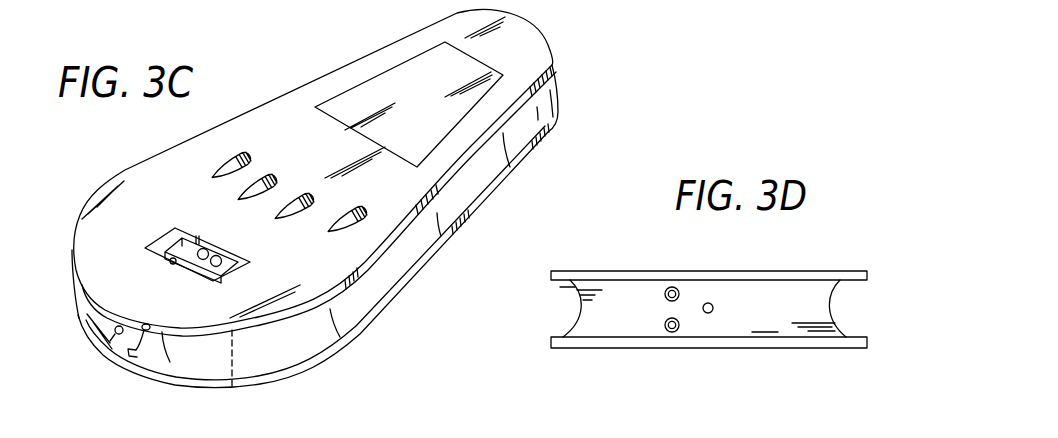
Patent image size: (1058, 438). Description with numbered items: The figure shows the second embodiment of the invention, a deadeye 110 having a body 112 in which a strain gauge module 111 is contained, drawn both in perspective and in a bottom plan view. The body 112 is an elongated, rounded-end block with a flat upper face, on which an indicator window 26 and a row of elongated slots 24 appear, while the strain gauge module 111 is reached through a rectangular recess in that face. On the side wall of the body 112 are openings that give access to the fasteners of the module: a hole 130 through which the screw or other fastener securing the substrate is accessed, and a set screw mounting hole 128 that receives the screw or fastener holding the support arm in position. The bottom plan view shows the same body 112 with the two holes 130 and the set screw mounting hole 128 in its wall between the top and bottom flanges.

In FIG. 3D, the deadeye 110 is at (848, 228).
In FIG. 3C, the strain gauge module 111 is at (409, 23).
In FIG. 3C, the body 112 is at (292, 105).
In FIG. 3C, the display window 26 is at (391, 84).
In FIG. 3C, the indicator slots 24 is at (247, 150).
In FIG. 3C, the hole 130 is at (115, 334).
In FIG. 3D, the hole 130 is at (677, 319).
In FIG. 3C, the set screw mounting hole 128 is at (135, 354).
In FIG. 3D, the set screw mounting hole 128 is at (711, 304).